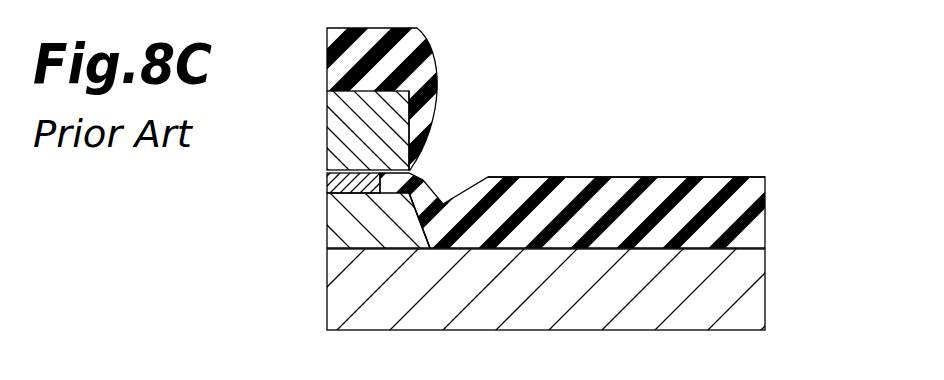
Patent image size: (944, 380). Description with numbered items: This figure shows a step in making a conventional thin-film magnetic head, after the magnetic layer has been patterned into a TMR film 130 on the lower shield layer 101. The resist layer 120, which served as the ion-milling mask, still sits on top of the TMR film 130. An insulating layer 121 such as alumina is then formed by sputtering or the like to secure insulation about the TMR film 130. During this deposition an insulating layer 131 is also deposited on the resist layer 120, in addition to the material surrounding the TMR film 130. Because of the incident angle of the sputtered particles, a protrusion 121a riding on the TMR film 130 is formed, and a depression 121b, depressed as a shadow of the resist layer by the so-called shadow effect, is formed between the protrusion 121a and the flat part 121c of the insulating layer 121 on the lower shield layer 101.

The lower shield layer 101 is at (760, 285).
The resist layer 120 is at (332, 128).
The insulating layer 121 is at (760, 218).
The protrusion 121a is at (387, 187).
The depression 121b is at (456, 187).
The flat part 121c is at (578, 177).
The TMR film 130 is at (332, 222).
The insulating layer 131 is at (332, 40).